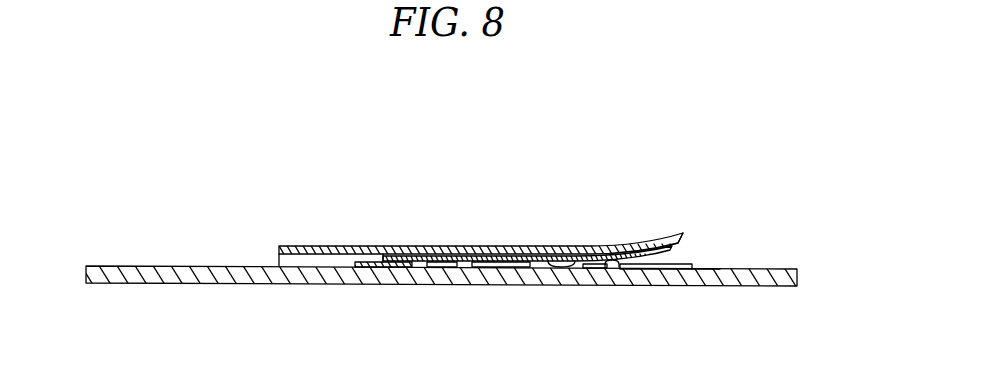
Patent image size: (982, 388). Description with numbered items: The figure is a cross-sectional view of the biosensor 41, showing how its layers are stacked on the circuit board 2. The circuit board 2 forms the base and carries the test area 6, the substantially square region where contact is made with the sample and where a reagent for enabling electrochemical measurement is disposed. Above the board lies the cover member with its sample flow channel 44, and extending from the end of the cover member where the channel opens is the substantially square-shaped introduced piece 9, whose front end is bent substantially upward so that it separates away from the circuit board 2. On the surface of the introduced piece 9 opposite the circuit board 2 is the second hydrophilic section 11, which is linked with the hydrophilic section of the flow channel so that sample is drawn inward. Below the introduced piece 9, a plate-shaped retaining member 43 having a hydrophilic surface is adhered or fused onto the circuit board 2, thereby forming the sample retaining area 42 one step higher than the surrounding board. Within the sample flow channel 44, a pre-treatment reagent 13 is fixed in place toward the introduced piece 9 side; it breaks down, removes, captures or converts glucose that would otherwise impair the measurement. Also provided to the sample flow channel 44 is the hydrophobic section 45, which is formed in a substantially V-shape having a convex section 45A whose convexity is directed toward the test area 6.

The circuit board 2 is at (228, 284).
The biosensor 41 is at (278, 212).
The convex section 45A is at (552, 257).
The hydrophobic section 45 is at (529, 192).
The test area 6 is at (463, 268).
The sample flow channel 44 is at (545, 268).
The pre-treatment reagent 13 is at (618, 263).
The retaining member 43 is at (684, 262).
The introduced piece 9 is at (665, 240).
The second hydrophilic section 11 is at (682, 250).
The sample retaining area 42 is at (708, 252).